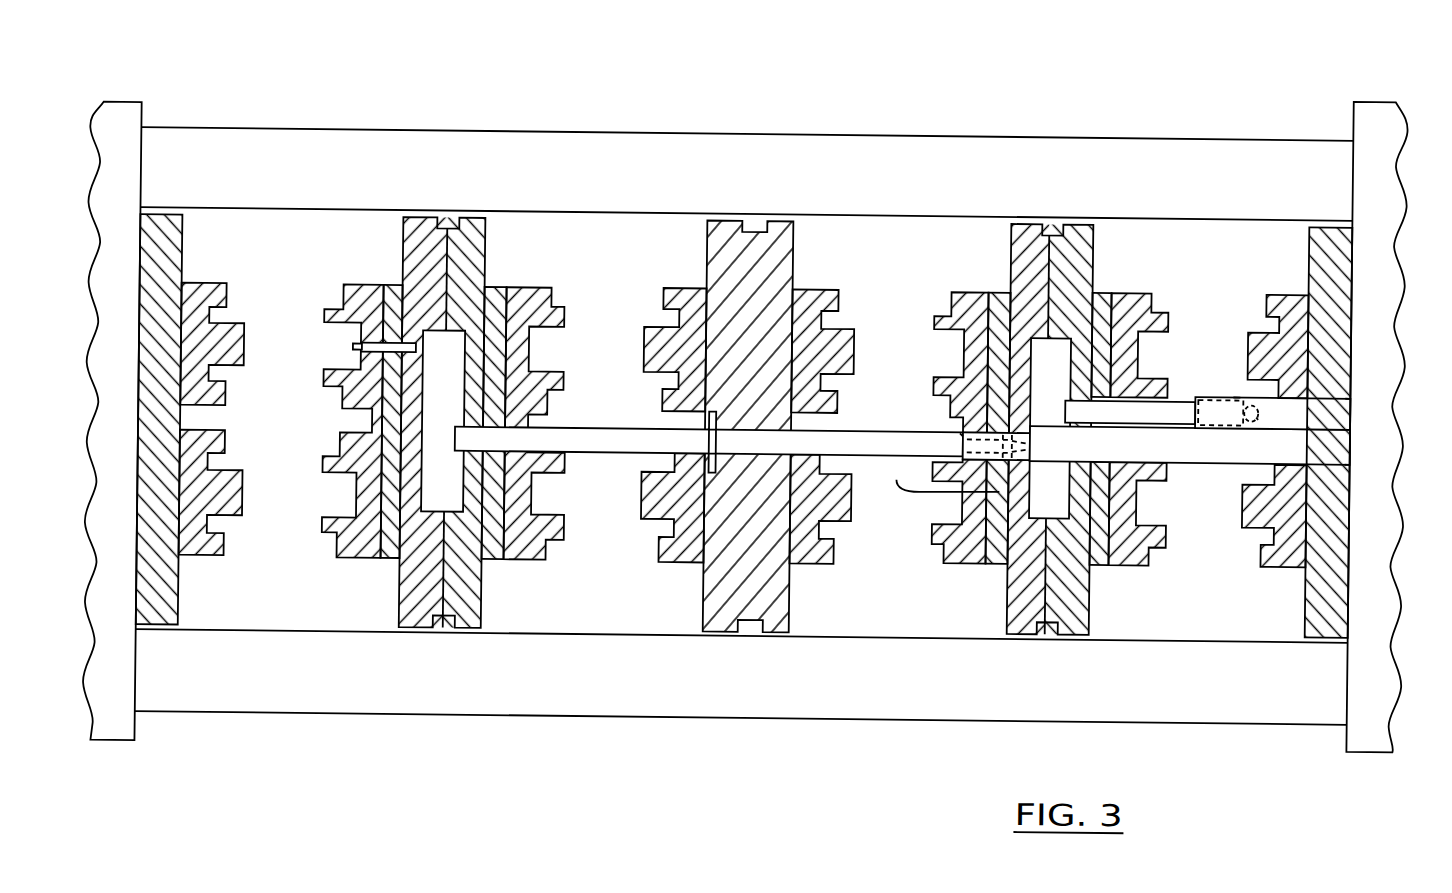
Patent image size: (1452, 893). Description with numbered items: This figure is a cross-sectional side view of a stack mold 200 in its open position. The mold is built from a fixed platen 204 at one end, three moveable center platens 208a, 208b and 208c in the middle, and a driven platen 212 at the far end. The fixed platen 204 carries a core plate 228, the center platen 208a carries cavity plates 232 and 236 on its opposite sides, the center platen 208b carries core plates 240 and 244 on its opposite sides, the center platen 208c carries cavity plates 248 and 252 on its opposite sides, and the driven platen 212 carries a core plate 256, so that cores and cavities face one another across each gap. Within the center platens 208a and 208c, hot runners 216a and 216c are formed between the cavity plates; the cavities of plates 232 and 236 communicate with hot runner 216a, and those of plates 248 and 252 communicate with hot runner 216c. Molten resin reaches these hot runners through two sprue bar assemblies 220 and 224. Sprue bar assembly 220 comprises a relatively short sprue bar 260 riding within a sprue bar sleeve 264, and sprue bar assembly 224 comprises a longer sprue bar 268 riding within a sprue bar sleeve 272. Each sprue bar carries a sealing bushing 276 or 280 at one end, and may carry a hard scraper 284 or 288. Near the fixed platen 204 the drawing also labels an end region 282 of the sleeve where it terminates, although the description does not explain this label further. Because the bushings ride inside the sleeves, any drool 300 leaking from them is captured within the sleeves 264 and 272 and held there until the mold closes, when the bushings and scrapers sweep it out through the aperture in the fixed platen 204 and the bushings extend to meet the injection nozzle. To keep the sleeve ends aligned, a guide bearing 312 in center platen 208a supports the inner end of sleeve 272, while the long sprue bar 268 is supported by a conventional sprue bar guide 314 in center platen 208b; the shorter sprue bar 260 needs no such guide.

The stack mold 200 is at (1101, 96).
The fixed platen 204 is at (1372, 121).
The driven platen 212 is at (117, 135).
The center platen 208a is at (1021, 371).
The center platen 208b is at (750, 222).
The center platen 208c is at (497, 360).
The hot runner 216a is at (1041, 366).
The hot runner 216c is at (453, 373).
The sprue bar assembly 220 is at (1237, 382).
The sprue bar assembly 224 is at (985, 500).
The core plate 228 is at (1256, 324).
The cavity plate 232 is at (1149, 313).
The cavity plate 236 is at (944, 316).
The core plate 240 is at (853, 327).
The core plate 244 is at (647, 329).
The cavity plate 248 is at (553, 299).
The cavity plate 252 is at (336, 300).
The core plate 256 is at (242, 336).
The sprue bar 260 is at (1140, 410).
The sprue bar sleeve 264 is at (1329, 420).
The sprue bar 268 is at (862, 444).
The sprue bar sleeve 272 is at (1164, 453).
The sealing bushing 276 is at (1258, 413).
The sealing bushing 280 is at (1032, 441).
The end portion 282 is at (1352, 392).
The scraper 284 is at (1236, 392).
The scraper 288 is at (960, 431).
The drool 300 is at (1352, 458).
The guide bearing 312 is at (984, 369).
The sprue bar guide 314 is at (710, 419).